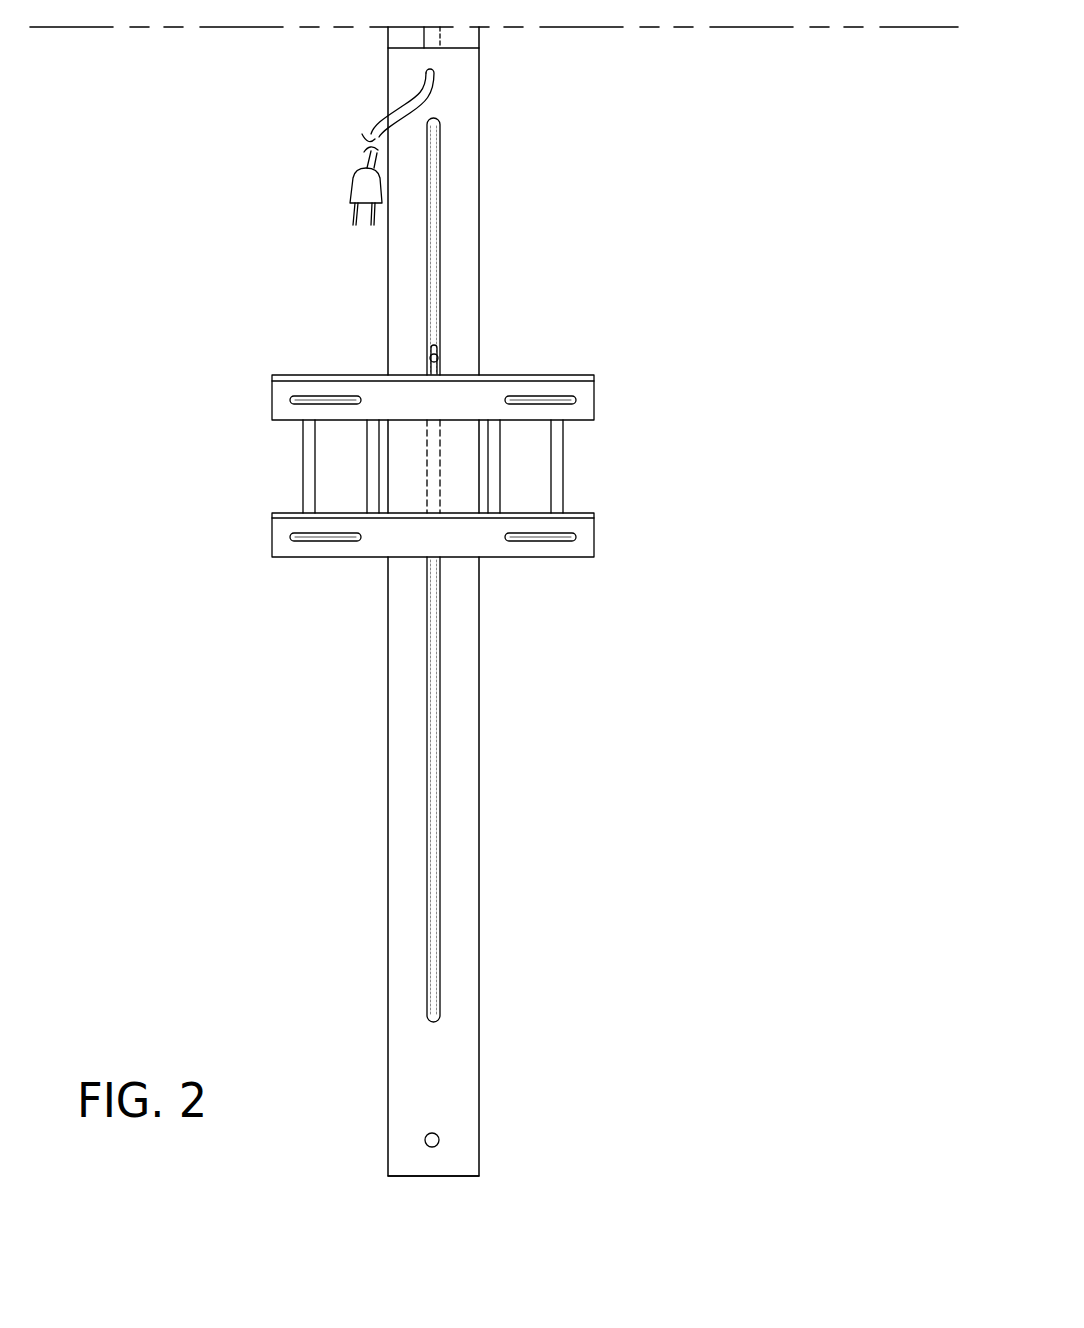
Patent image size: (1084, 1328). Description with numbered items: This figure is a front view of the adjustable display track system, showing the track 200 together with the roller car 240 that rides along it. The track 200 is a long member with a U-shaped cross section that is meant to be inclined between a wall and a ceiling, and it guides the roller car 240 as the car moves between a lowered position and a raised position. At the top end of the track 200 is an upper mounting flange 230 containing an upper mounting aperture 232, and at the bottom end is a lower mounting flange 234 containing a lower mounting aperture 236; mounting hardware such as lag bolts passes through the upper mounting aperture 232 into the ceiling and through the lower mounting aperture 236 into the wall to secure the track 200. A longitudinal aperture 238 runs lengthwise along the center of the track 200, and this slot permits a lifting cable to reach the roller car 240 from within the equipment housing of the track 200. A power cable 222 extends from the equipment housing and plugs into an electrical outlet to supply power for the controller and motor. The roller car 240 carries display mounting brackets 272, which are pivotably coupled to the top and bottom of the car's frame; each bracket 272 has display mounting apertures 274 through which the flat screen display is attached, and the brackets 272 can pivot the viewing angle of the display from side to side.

The track 200 is at (479, 1050).
The power cable 222 is at (382, 120).
The upper mounting flange 230 is at (472, 40).
The upper mounting aperture 232 is at (424, 35).
The lower mounting flange 234 is at (388, 1136).
The lower mounting aperture 236 is at (439, 1138).
The longitudinal aperture 238 is at (440, 909).
The roller car 240 is at (443, 454).
The display mounting brackets 272 is at (272, 535).
The display mounting apertures 274 is at (342, 400).